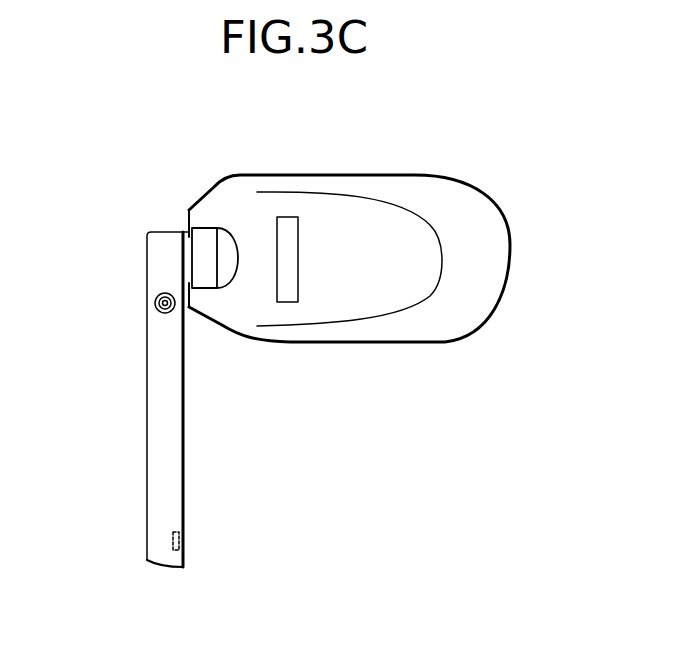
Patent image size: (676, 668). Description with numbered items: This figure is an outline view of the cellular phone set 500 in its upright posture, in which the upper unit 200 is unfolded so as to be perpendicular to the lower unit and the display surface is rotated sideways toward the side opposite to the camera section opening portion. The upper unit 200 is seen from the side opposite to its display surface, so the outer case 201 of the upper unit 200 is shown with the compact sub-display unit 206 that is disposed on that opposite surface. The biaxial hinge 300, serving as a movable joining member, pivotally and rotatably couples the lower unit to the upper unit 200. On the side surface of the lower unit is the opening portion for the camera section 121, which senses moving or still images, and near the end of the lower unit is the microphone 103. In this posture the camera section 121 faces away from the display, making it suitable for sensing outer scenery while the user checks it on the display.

The upper unit 200 is at (457, 335).
The outer case 201 is at (358, 173).
The sub-display unit 206 is at (287, 302).
The biaxial hinge 300 is at (147, 250).
The camera section 121 is at (155, 305).
The microphone 103 is at (181, 547).
The cellular phone set 500 is at (287, 462).